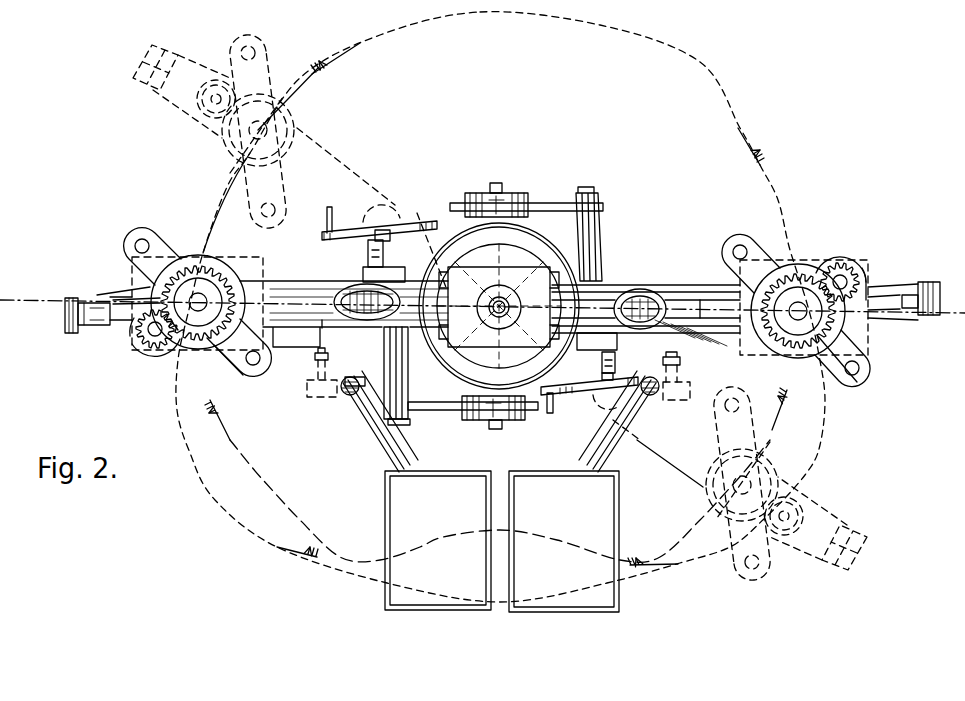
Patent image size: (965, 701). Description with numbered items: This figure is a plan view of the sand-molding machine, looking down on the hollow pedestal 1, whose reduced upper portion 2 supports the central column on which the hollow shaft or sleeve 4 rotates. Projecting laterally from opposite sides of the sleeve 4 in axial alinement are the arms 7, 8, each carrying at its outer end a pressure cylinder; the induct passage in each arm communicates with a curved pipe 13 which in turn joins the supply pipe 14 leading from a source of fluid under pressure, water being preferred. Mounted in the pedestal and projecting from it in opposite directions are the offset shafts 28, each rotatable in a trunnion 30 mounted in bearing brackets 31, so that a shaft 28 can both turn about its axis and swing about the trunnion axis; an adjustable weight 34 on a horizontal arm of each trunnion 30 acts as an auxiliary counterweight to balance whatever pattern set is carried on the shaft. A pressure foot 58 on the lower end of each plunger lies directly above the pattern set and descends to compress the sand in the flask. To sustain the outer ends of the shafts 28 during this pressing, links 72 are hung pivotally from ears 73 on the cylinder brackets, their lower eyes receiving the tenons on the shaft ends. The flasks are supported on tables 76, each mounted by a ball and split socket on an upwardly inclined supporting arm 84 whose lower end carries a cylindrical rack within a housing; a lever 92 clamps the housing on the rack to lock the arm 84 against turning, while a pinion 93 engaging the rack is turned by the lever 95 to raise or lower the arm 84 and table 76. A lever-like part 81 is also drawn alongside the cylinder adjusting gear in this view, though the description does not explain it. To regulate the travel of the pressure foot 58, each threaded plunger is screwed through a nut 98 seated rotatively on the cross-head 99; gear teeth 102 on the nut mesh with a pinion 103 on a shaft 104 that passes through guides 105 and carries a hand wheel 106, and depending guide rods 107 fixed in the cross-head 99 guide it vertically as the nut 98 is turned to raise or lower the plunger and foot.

The hollow pedestal 1 is at (455, 368).
The upper portion of the pedestal 2 is at (486, 352).
The hollow shaft or sleeve 4 is at (501, 340).
The arm 7 is at (700, 320).
The arm 8 is at (322, 326).
The curved pipe 13 is at (283, 306).
The supply pipe 14 is at (500, 282).
The shaft 28 is at (330, 283).
The trunnion 30 is at (384, 360).
The bearing bracket 31 is at (368, 252).
The adjustable weight 34 is at (522, 195).
The pressure foot 58 is at (264, 268).
The link 72 is at (66, 310).
The ear 73 is at (100, 294).
The table 76 is at (502, 541).
The lever 81 is at (410, 221).
The supporting arm 84 is at (368, 438).
The lever 92 is at (362, 374).
The pinion 93 is at (318, 398).
The lever 95 is at (327, 352).
The nut 98 is at (201, 298).
The cross-head 99 is at (150, 232).
The gear teeth 102 is at (206, 338).
The pinion 103 is at (140, 335).
The shaft 104 is at (150, 333).
The guide 105 is at (188, 345).
The hand wheel 106 is at (160, 346).
The guide rod 107 is at (134, 246).